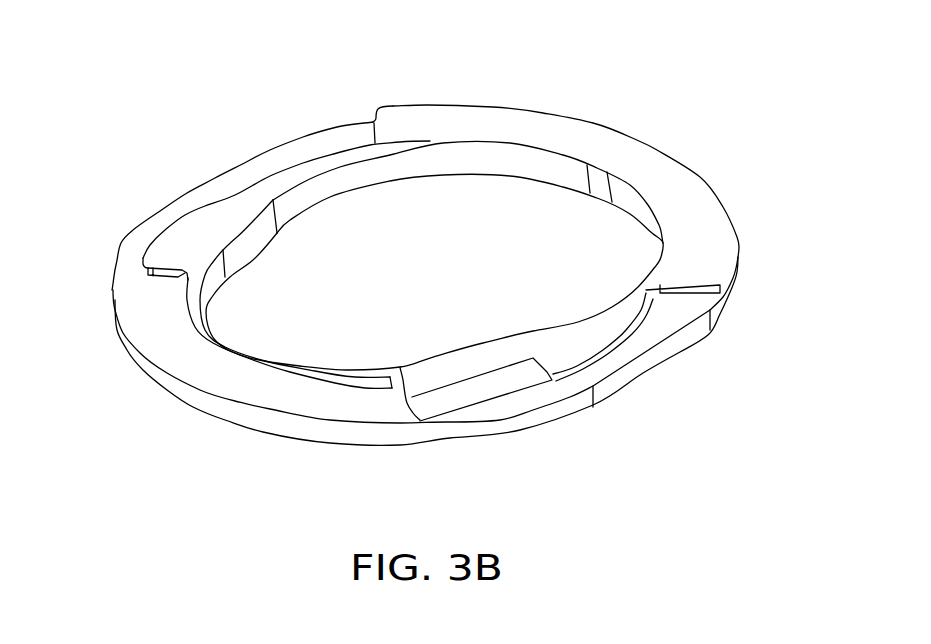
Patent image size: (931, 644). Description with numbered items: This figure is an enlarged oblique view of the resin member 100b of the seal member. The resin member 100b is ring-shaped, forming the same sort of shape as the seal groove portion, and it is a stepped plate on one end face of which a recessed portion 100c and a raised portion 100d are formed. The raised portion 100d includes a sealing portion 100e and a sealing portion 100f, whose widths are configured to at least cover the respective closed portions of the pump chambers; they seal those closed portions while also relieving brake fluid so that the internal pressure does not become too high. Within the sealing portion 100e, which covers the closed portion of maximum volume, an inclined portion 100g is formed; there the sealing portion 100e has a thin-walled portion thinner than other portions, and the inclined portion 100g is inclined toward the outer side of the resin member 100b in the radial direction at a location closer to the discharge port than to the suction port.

The resin member 100b is at (681, 145).
The recessed portion 100c is at (237, 385).
The raised portion 100d is at (597, 140).
The sealing portion 100e is at (567, 345).
The sealing portion 100f is at (190, 231).
The inclined portion 100g is at (473, 395).